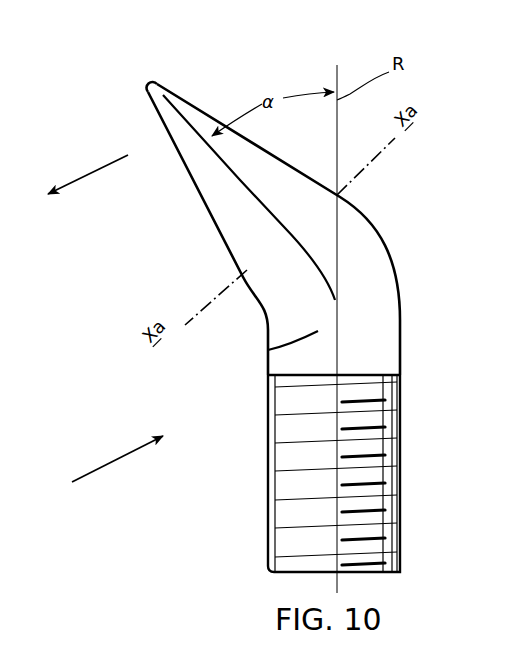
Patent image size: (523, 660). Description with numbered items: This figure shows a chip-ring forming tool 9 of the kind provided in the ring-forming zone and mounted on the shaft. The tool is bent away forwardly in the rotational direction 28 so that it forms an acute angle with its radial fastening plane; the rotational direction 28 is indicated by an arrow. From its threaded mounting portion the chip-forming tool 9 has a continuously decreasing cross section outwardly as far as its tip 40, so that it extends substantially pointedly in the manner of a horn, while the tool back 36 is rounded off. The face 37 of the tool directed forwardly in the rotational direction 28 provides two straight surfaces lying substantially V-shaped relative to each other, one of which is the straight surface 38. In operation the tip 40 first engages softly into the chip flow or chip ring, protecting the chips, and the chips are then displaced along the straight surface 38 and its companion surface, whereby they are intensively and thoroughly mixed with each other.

The chip-forming tool 9 is at (107, 470).
The rotational direction 28 is at (88, 170).
The tool back 36 is at (368, 221).
The face 37 is at (196, 189).
The straight surface 38 is at (240, 212).
The tip 40 is at (150, 88).